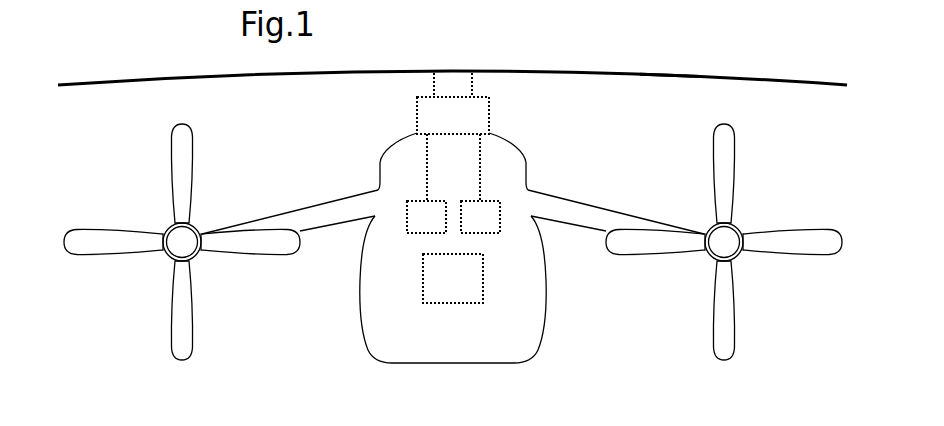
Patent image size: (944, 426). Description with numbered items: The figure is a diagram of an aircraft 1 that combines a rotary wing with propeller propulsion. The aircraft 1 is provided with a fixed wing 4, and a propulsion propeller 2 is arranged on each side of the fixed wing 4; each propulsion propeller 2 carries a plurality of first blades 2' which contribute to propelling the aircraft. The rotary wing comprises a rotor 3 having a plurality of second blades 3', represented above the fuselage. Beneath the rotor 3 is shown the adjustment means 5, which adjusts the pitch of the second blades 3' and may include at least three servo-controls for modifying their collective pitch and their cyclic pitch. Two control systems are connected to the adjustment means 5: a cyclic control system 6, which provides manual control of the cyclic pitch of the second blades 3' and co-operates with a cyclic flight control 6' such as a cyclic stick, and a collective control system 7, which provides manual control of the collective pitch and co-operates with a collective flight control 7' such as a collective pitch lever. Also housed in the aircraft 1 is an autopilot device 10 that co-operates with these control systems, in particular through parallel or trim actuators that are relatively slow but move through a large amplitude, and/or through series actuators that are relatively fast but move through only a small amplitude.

The aircraft 1 is at (598, 343).
The propulsion propeller 2 is at (182, 242).
The first blades 2' is at (113, 215).
The rotor 3 is at (452, 45).
The second blades 3' is at (670, 44).
The fixed wing 4 is at (330, 202).
The adjustment means 5 is at (444, 126).
The cyclic control system 6 is at (391, 167).
The collective control system 7 is at (517, 167).
The cyclic flight control 6' is at (426, 217).
The collective flight control 7' is at (480, 217).
The autopilot device 10 is at (439, 289).